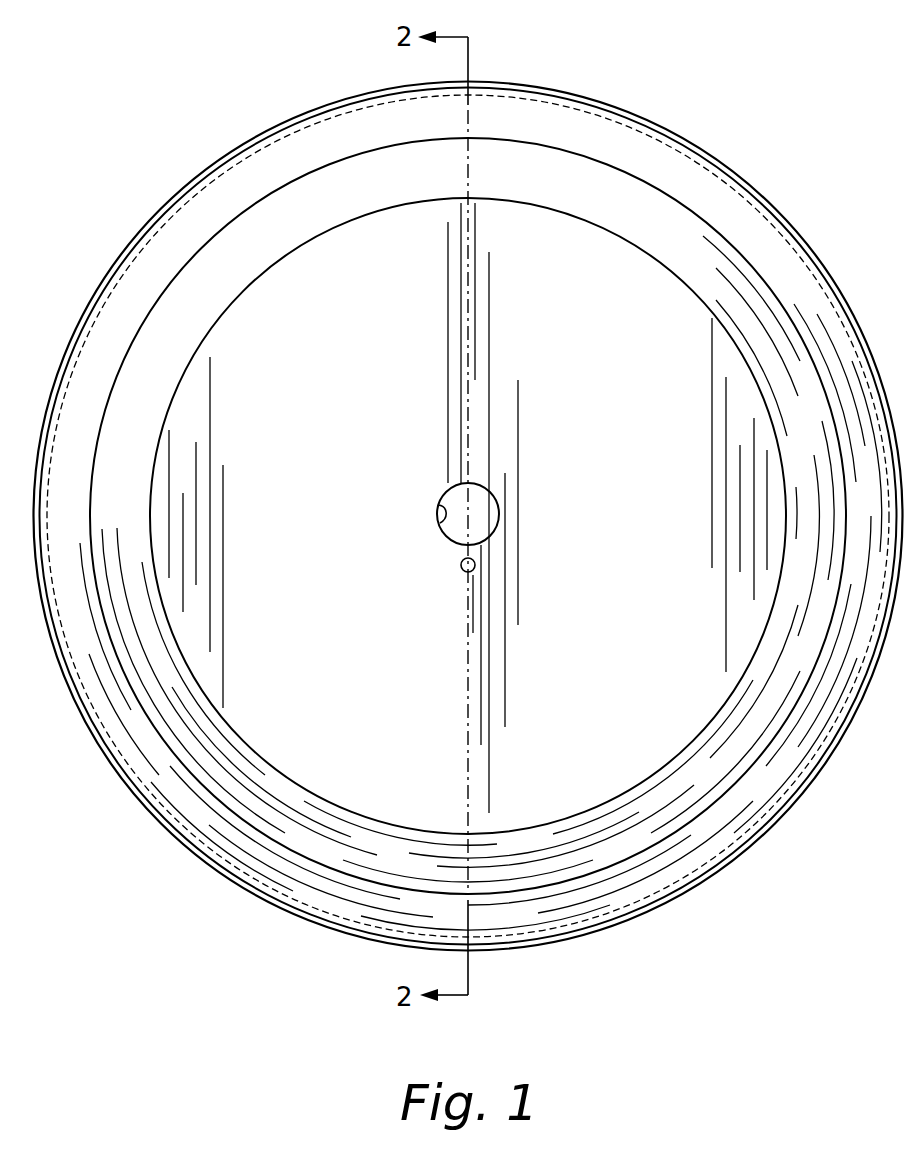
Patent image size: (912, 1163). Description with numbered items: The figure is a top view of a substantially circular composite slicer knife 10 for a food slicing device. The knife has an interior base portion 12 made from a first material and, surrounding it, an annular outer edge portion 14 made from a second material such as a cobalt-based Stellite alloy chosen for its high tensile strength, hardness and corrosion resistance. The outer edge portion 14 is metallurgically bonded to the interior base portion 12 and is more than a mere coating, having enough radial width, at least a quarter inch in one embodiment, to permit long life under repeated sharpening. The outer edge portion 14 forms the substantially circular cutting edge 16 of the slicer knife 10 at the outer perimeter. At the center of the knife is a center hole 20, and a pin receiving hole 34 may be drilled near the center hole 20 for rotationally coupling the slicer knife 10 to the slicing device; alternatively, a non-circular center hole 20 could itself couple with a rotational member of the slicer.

The slicer knife 10 is at (257, 102).
The interior base portion 12 is at (283, 373).
The outer edge portion 14 is at (622, 108).
The cutting edge 16 is at (728, 165).
The center hole 20 is at (440, 525).
The pin receiving hole 34 is at (461, 563).